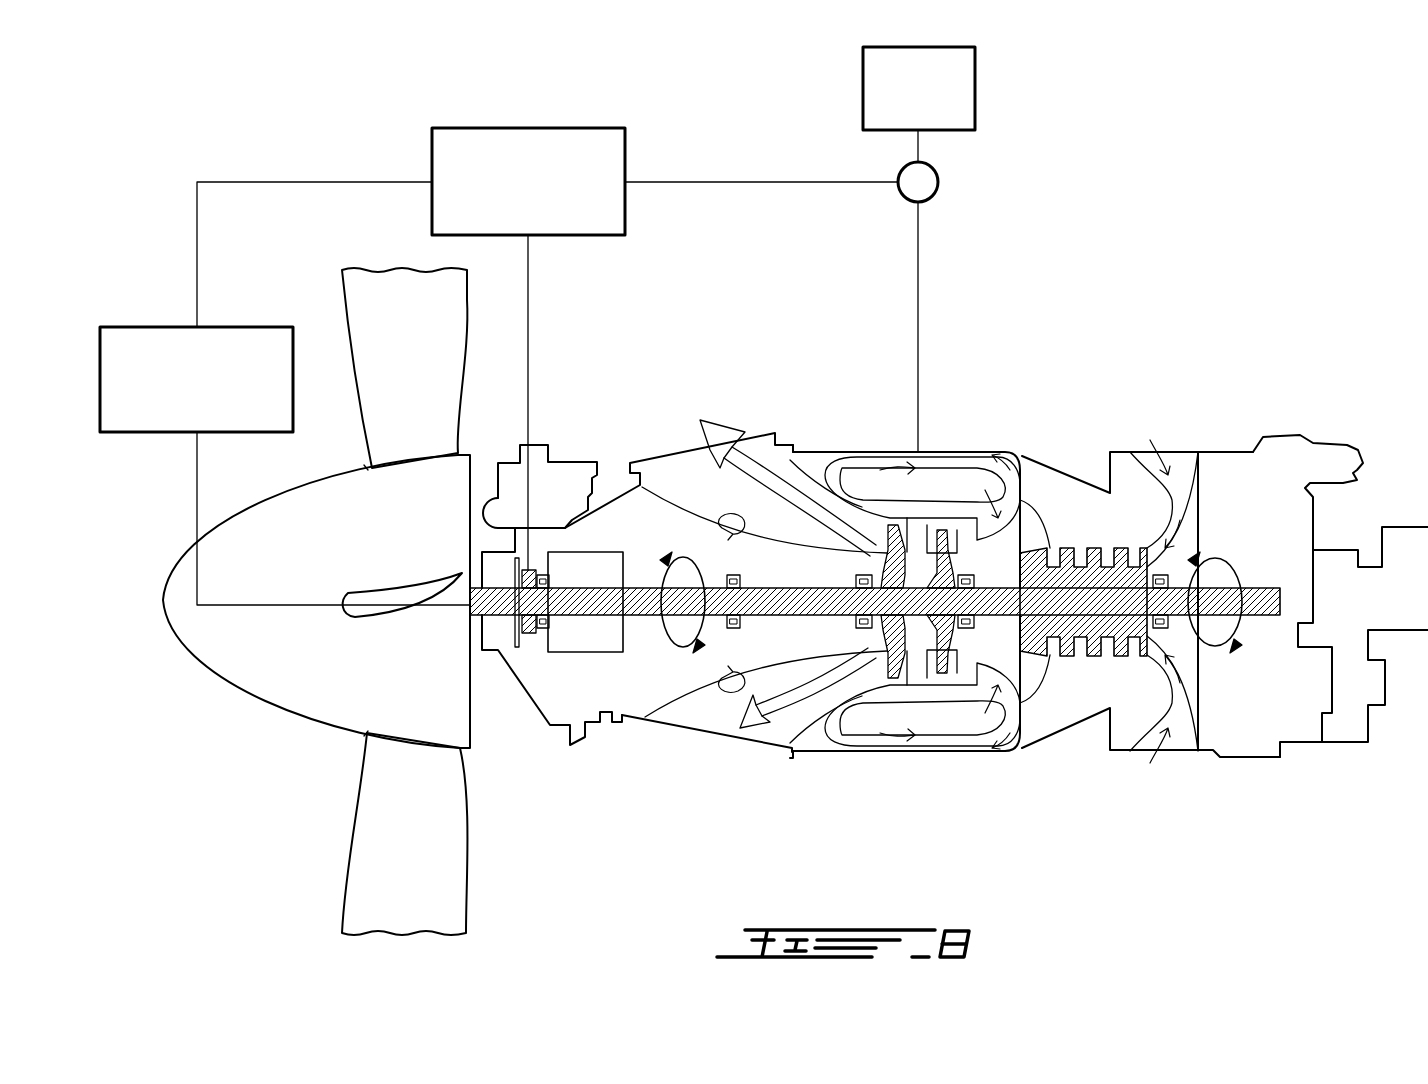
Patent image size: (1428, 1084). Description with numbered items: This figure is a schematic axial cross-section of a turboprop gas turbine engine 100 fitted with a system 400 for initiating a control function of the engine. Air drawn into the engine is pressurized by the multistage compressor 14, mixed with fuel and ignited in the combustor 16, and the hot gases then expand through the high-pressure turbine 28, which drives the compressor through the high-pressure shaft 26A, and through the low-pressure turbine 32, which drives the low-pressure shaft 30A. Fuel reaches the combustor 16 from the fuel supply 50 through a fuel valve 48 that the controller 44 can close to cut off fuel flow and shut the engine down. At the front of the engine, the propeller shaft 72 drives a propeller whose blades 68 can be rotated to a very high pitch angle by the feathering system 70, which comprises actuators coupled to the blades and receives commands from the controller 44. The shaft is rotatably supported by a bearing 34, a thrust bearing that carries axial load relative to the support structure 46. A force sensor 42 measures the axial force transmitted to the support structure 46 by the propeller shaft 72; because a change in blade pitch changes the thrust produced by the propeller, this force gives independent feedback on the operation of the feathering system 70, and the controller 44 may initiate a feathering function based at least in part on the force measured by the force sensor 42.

The turboprop gas turbine engine 100 is at (230, 135).
The propeller blades 68 is at (377, 300).
The feathering system 70 is at (145, 434).
The controller 44 is at (625, 212).
The fuel supply 50 is at (975, 88).
The fuel valve 48 is at (938, 182).
The system for initiating a control function 400 is at (1148, 276).
The propeller shaft 72 is at (497, 585).
The bearing 34 is at (545, 560).
The support structure 46 is at (517, 655).
The force sensor 42 is at (532, 652).
The low-pressure shaft 30A is at (768, 620).
The combustor 16 is at (885, 480).
The low-pressure turbine 32 is at (890, 680).
The high-pressure turbine 28 is at (945, 670).
The multistage compressor 14 is at (1095, 615).
The high-pressure shaft 26A is at (1188, 620).